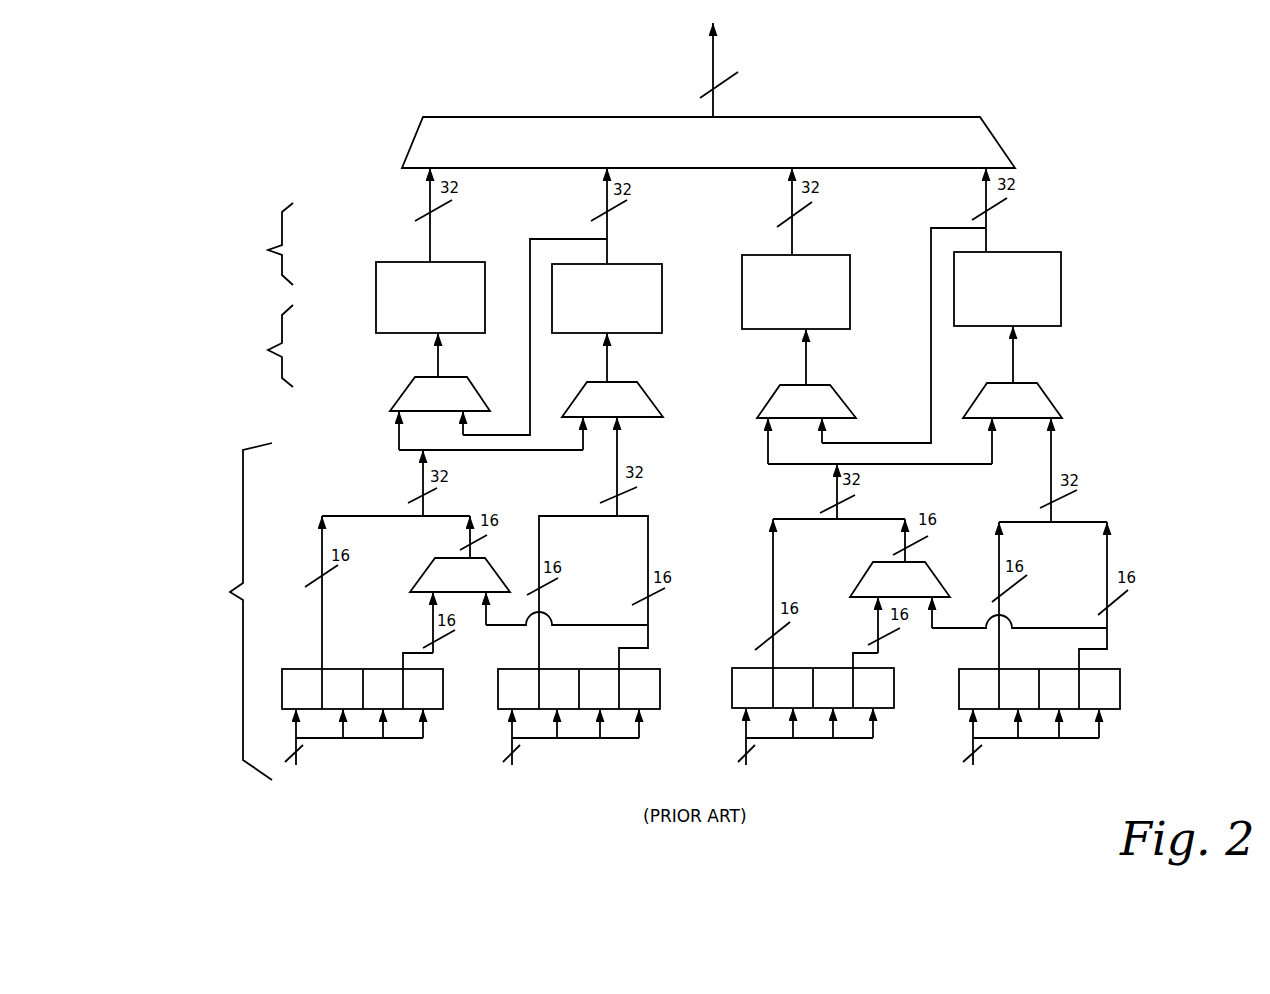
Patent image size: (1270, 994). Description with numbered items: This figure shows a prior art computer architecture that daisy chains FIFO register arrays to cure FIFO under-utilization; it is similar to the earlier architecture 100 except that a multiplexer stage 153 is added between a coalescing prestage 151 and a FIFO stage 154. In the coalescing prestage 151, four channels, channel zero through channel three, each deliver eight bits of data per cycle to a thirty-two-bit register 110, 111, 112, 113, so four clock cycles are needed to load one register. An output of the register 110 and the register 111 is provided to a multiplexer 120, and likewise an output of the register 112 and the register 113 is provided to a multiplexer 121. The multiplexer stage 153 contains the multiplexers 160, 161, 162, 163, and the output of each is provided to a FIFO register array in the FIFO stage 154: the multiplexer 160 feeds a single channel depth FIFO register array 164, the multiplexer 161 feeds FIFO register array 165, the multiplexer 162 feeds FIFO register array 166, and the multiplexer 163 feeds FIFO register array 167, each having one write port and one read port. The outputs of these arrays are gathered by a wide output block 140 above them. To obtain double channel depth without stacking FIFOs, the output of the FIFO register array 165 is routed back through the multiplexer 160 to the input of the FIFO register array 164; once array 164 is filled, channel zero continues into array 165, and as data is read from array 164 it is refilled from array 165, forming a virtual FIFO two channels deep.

The architecture 100 is at (363, 829).
The register 110 is at (445, 688).
The register 111 is at (662, 693).
The register 112 is at (895, 696).
The register 113 is at (1122, 690).
The multiplexer 120 is at (446, 585).
The multiplexer 121 is at (886, 588).
The output multiplexer 140 is at (856, 144).
The coalescing prestage 151 is at (229, 611).
The multiplexer stage 153 is at (268, 362).
The FIFO stage 154 is at (270, 235).
The multiplexer 160 is at (426, 403).
The multiplexer 161 is at (598, 408).
The multiplexer 162 is at (792, 410).
The multiplexer 163 is at (999, 408).
The FIFO register array 164 is at (416, 300).
The FIFO register array 165 is at (593, 300).
The FIFO register array 166 is at (782, 293).
The FIFO register array 167 is at (994, 288).